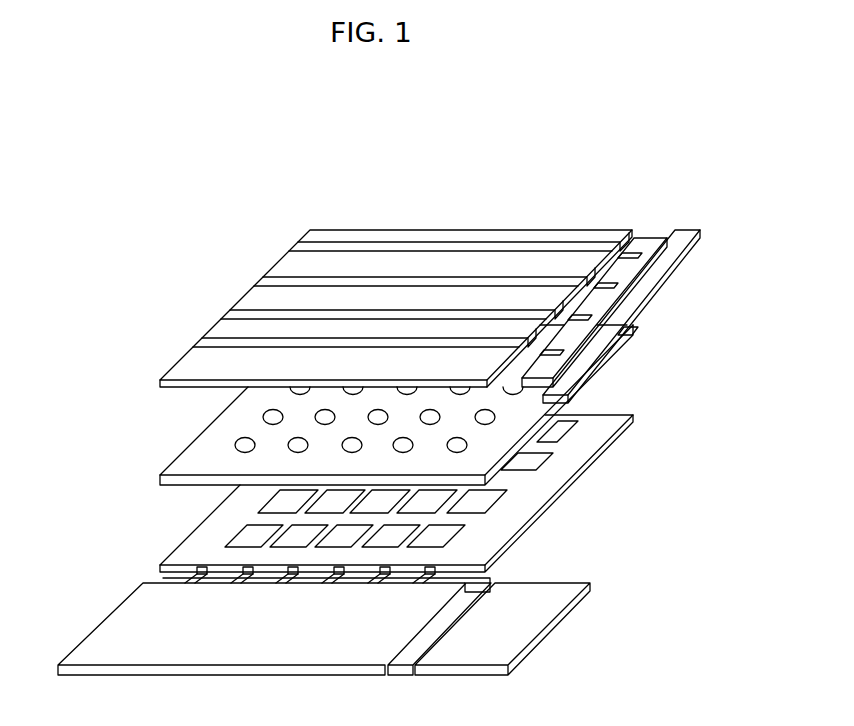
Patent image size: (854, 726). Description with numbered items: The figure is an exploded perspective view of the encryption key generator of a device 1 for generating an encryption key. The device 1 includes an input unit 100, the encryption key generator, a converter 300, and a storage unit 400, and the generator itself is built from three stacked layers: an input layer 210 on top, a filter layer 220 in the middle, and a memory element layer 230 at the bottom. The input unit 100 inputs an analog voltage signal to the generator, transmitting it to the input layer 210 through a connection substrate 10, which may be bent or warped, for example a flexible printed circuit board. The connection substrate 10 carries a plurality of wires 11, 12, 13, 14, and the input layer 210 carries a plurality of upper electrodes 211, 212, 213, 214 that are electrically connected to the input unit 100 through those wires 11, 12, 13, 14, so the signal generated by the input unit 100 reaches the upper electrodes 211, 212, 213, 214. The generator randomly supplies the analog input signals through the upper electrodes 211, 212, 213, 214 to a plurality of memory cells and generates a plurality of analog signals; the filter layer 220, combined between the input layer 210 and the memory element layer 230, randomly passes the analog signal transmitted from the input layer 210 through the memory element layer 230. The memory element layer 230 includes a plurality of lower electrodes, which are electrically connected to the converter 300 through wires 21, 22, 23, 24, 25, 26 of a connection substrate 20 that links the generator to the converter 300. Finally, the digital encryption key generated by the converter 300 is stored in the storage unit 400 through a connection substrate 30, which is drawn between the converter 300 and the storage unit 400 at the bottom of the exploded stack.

The device for generating an encryption key 1 is at (138, 226).
The connection substrate 10 is at (645, 241).
The wire 11 is at (628, 260).
The wire 12 is at (598, 289).
The wire 13 is at (568, 321).
The wire 14 is at (540, 356).
The input unit 100 is at (687, 233).
The input layer 210 is at (157, 382).
The upper electrode 211 is at (293, 250).
The upper electrode 212 is at (260, 277).
The upper electrode 213 is at (230, 309).
The upper electrode 214 is at (197, 338).
The filter layer 220 is at (197, 442).
The memory element layer 230 is at (160, 568).
The connection substrate 20 is at (485, 578).
The wire 21 is at (187, 582).
The wire 22 is at (232, 582).
The wire 23 is at (277, 582).
The wire 24 is at (322, 582).
The wire 25 is at (367, 582).
The wire 26 is at (412, 582).
The connection substrate 30 is at (403, 670).
The converter 300 is at (77, 670).
The storage unit 400 is at (463, 670).